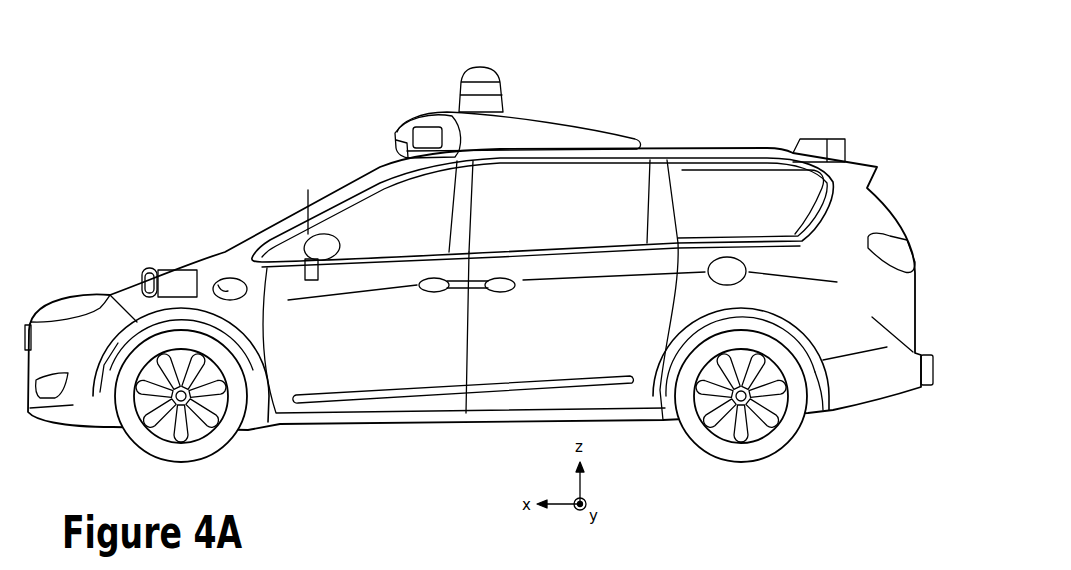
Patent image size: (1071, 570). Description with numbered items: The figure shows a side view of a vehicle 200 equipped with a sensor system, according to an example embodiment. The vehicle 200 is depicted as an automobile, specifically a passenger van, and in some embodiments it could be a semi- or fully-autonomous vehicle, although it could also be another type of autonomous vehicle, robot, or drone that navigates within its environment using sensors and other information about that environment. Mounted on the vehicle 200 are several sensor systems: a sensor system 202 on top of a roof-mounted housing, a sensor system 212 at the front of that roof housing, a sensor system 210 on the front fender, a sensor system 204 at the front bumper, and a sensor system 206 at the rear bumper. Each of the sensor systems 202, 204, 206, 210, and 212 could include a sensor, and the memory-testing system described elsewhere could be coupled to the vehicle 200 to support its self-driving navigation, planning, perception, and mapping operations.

The vehicle 200 is at (836, 82).
The sensor system 202 is at (497, 73).
The sensor system 204 is at (29, 322).
The sensor system 206 is at (927, 388).
The sensor system 210 is at (157, 283).
The sensor system 212 is at (395, 153).